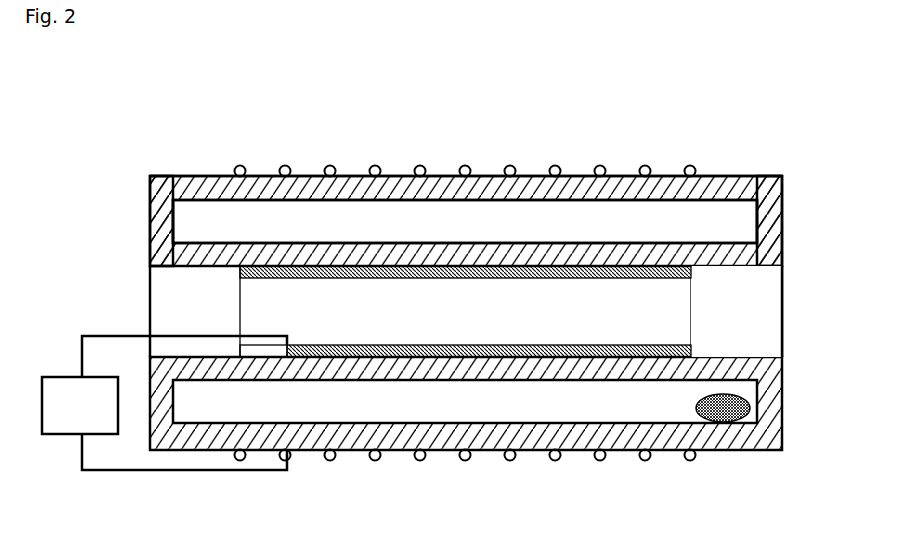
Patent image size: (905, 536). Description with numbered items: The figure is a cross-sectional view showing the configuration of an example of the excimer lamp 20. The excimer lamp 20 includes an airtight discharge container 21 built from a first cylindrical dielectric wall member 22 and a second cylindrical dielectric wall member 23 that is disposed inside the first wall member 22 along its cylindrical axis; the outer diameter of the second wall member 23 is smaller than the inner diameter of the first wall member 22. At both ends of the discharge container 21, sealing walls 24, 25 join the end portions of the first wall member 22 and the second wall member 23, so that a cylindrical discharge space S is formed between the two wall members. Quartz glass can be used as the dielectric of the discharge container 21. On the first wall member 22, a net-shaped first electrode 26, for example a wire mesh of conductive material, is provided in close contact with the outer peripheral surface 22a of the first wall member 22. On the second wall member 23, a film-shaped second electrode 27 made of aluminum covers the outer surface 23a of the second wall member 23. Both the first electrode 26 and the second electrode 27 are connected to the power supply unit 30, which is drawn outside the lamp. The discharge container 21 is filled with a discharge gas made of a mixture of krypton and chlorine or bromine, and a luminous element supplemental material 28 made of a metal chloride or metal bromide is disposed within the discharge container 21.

The excimer lamp 20 is at (442, 258).
The airtight discharge container 21 is at (442, 267).
The first cylindrical dielectric wall member 22 is at (458, 177).
The outer peripheral surface 22a is at (350, 176).
The second cylindrical dielectric wall member 23 is at (493, 273).
The outer surface 23a is at (713, 268).
The sealing wall 24 is at (150, 216).
The sealing wall 25 is at (783, 218).
The first electrode 26 is at (287, 166).
The second electrode 27 is at (638, 280).
The luminous element supplemental material 28 is at (749, 412).
The power supply unit 30 is at (62, 377).
The discharge space S is at (447, 218).